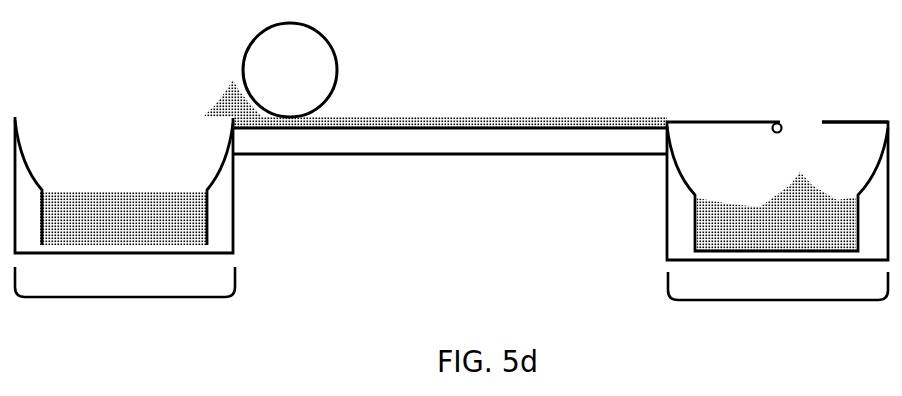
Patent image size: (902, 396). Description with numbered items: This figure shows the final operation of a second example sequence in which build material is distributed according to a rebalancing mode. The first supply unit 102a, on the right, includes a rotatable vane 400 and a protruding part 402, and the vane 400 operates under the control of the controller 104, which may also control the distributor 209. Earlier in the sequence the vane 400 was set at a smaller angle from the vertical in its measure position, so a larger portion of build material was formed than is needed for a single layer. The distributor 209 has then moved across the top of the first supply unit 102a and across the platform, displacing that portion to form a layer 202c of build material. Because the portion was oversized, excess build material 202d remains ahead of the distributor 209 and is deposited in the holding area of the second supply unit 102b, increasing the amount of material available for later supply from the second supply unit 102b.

The first supply unit 102a is at (785, 300).
The second supply unit 102b is at (133, 297).
The controller 104 is at (288, 155).
The layer of build material 202c is at (487, 124).
The excess build material 202d is at (218, 97).
The distributor 209 is at (337, 74).
The rotatable vane 400 is at (727, 124).
The protruding part 402 is at (822, 121).